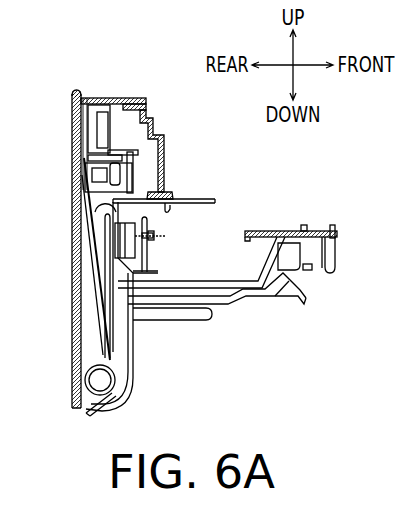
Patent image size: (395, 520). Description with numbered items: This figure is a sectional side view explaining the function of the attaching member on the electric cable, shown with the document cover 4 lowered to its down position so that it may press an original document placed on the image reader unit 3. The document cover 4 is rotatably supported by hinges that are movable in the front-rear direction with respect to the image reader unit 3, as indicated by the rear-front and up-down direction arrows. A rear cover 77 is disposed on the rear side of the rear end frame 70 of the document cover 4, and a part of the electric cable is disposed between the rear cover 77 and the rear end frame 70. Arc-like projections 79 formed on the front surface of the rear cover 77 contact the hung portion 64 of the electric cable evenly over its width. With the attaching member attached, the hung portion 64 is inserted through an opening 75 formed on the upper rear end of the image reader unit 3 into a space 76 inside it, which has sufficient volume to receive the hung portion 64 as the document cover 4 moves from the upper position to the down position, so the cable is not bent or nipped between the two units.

The image reader unit 3 is at (72, 330).
The document cover 4 is at (127, 95).
The hung portion 64 is at (81, 229).
The rear end frame 70 is at (150, 124).
The opening 75 is at (150, 192).
The space 76 is at (128, 378).
The rear cover 77 is at (77, 90).
The projections 79 is at (80, 172).